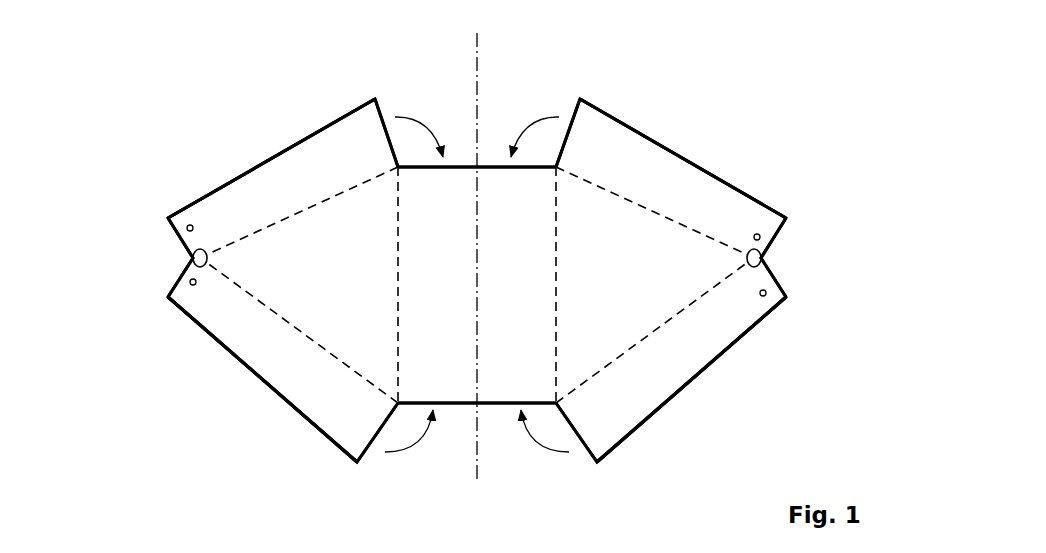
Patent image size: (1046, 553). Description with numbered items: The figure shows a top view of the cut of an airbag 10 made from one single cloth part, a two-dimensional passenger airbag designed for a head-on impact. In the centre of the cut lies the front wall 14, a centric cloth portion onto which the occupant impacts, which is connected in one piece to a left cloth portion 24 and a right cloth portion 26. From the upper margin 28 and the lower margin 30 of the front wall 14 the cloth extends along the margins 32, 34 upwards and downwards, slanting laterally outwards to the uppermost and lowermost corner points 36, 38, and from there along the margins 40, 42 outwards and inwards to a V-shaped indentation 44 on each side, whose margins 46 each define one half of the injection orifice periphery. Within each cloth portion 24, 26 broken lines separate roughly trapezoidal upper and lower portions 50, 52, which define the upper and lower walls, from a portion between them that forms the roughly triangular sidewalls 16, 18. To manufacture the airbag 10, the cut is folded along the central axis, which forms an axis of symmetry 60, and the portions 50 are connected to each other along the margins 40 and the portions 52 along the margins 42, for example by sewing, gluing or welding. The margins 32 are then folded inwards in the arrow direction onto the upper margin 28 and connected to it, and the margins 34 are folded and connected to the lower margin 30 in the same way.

The airbag 10 is at (725, 70).
The front wall 14 is at (462, 285).
The sidewall 16 is at (334, 285).
The sidewall 18 is at (644, 285).
The left cloth portion 24 is at (297, 452).
The right cloth portion 26 is at (653, 453).
The upper margin 28 is at (488, 165).
The lower margin 30 is at (488, 405).
The margin 32 is at (384, 108).
The margin 34 is at (365, 455).
The uppermost corner point 36 is at (375, 97).
The lowermost corner point 38 is at (356, 464).
The margin 40 is at (270, 160).
The margin 42 is at (240, 365).
The V-shaped indentation 44 is at (173, 255).
The margin 46 is at (170, 232).
The upper portion 50 is at (318, 138).
The lower portion 52 is at (284, 385).
The axis of symmetry 60 is at (478, 45).